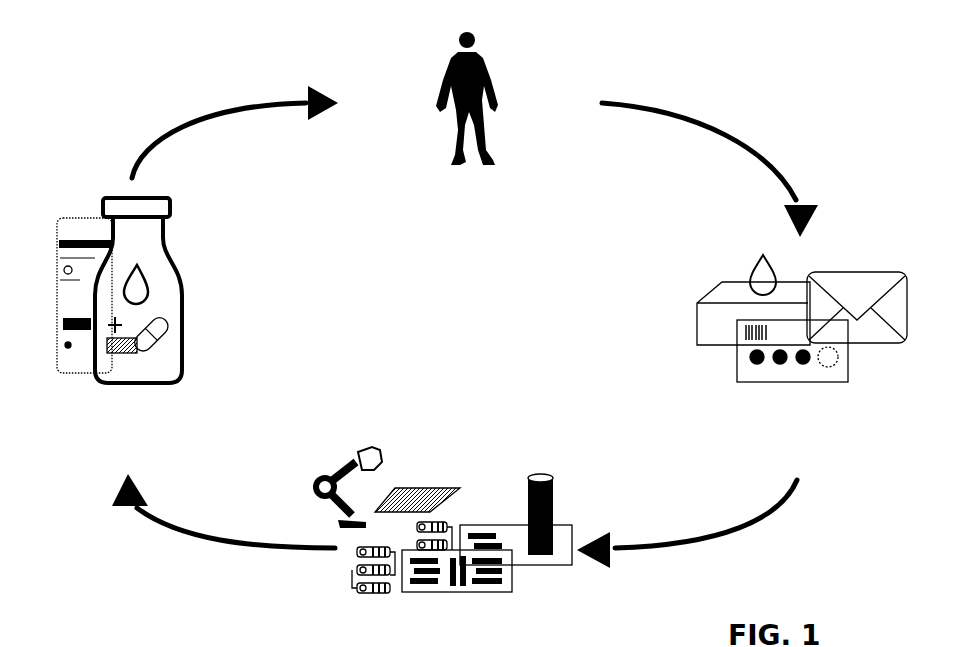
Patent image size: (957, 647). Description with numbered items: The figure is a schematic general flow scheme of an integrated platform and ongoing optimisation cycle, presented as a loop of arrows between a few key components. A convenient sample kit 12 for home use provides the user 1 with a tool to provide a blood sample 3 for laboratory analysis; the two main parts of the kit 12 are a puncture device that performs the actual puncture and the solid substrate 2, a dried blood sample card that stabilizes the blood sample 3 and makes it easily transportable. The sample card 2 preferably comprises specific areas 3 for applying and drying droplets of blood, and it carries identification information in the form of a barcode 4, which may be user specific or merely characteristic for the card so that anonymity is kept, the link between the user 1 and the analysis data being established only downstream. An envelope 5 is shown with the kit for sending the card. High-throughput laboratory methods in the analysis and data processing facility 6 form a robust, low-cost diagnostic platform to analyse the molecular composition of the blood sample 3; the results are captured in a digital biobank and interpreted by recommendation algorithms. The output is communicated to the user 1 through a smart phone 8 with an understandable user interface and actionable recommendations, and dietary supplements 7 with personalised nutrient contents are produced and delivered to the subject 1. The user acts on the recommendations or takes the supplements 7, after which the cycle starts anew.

The user/subject 1 is at (504, 55).
The solid substrate for blood sample 2 is at (825, 375).
The blood sample 3 is at (755, 365).
The barcode on sample card 4 is at (742, 340).
The envelope 5 is at (848, 287).
The high throughput laboratory analysis and data management and nutritional informat 6 is at (478, 460).
The individualized nutritional supplement formulation 7 is at (177, 294).
The smart phone or other communication device 8 is at (73, 365).
The sample kit 12 is at (708, 305).